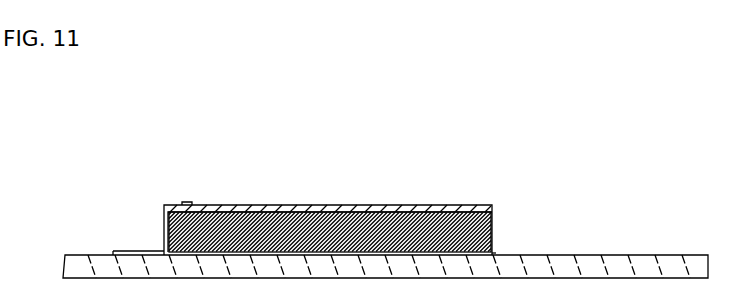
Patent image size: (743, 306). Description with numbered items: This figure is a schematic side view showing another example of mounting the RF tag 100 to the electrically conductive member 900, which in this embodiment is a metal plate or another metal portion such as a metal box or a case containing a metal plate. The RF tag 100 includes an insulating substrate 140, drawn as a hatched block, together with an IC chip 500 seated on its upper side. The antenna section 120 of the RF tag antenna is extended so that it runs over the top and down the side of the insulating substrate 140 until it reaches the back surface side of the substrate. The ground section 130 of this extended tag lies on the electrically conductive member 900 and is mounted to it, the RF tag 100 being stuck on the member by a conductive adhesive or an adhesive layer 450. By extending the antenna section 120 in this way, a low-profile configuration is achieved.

The RF tag 100 is at (501, 154).
The antenna section 120 is at (440, 209).
The ground section 130 is at (116, 252).
The insulating substrate 140 is at (300, 230).
The adhesive layer 450 is at (495, 255).
The IC chip 500 is at (190, 204).
The electrically conductive member 900 is at (657, 263).